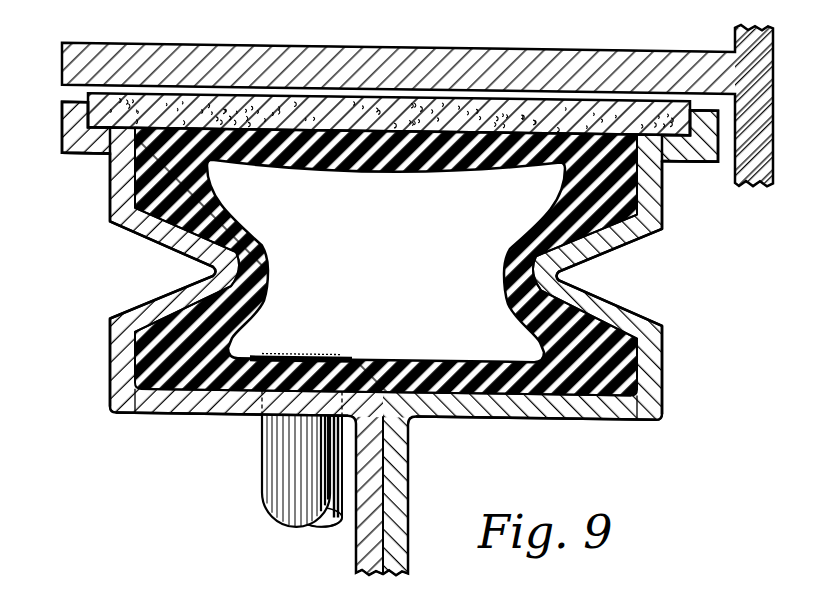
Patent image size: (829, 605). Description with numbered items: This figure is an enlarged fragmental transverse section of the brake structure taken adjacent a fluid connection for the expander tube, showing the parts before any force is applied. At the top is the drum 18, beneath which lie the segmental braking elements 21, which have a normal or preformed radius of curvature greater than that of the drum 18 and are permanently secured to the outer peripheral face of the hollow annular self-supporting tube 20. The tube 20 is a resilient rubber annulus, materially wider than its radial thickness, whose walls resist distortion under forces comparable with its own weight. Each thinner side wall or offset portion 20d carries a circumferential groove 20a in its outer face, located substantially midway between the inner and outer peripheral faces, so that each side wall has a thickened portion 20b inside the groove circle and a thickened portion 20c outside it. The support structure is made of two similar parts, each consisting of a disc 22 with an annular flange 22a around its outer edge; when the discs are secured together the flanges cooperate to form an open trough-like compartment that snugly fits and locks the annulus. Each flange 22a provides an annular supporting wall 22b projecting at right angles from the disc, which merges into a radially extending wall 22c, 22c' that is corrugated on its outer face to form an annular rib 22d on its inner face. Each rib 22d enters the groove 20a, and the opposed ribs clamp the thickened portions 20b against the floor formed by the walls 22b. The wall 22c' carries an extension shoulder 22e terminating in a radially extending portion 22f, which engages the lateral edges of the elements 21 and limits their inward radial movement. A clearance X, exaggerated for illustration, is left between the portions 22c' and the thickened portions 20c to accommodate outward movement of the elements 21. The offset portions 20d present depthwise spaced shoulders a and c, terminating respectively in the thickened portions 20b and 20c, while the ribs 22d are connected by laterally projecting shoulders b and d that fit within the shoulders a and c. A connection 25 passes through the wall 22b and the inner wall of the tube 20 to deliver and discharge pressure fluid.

The drum 18 is at (361, 38).
The segmental braking elements 21 is at (463, 99).
The hollow annular self-supporting tube 20 is at (400, 220).
The circumferential groove 20a is at (270, 284).
The thickened portion 20b is at (152, 370).
The thickened portion 20c is at (104, 224).
The offset portion 20d is at (266, 254).
The disc 22 is at (356, 551).
The annular flange 22a is at (135, 413).
The annular supporting wall 22b is at (213, 409).
The radially extending wall 22c is at (395, 366).
The radially extending wall portion 22c' is at (394, 212).
The annular rib 22d is at (218, 275).
The extension shoulder 22e is at (90, 153).
The radially extending portion 22f is at (52, 133).
The connection 25 is at (272, 469).
The clearance X is at (137, 125).
The shoulder a is at (537, 326).
The shoulder b is at (620, 305).
The shoulder c is at (540, 208).
The shoulder d is at (626, 233).